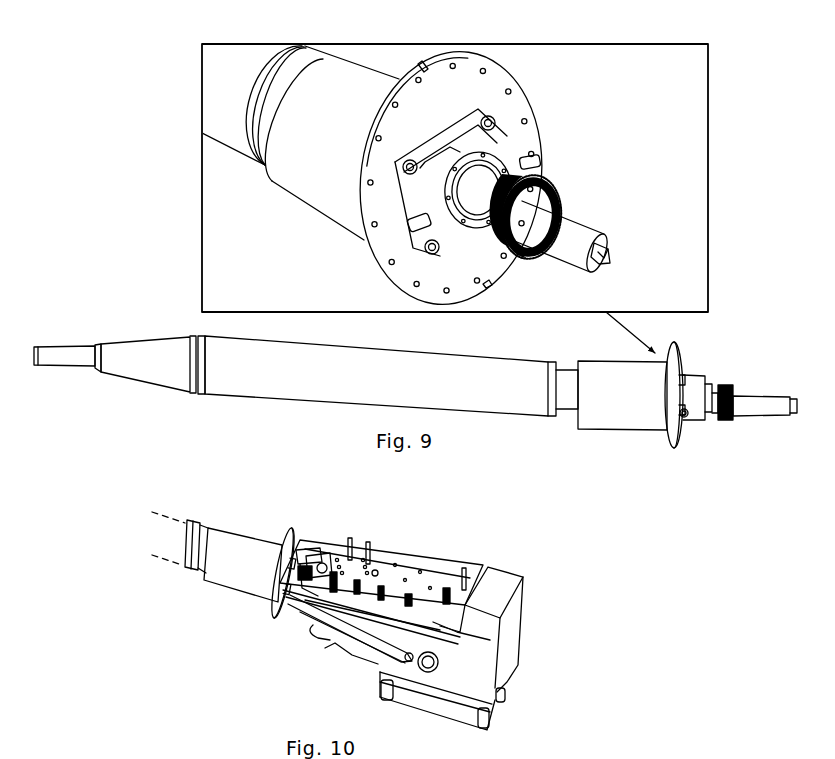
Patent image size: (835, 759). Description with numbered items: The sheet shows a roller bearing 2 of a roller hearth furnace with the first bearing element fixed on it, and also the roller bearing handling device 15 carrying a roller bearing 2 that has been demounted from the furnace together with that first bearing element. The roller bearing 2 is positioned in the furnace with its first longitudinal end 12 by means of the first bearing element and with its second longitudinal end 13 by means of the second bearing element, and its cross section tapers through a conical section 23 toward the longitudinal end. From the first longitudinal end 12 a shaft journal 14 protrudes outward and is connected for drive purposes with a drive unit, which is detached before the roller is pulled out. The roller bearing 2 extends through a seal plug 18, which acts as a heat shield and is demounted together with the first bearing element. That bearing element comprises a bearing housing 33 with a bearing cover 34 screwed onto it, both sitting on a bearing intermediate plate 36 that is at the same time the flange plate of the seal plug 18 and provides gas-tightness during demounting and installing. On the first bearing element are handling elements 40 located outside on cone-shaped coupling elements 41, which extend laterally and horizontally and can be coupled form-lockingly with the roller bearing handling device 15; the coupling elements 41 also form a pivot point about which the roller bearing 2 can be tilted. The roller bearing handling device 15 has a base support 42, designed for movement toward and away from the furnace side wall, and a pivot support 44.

In FIG. 9, the roller bearing 2 is at (222, 93).
In FIG. 10, the roller bearing 2 is at (152, 570).
In FIG. 9, the first longitudinal end 12 is at (633, 443).
In FIG. 9, the second longitudinal end 13 is at (70, 357).
In FIG. 9, the shaft journal 14 is at (550, 195).
In FIG. 10, the roller bearing handling device 15 is at (428, 613).
In FIG. 9, the seal plug 18 is at (300, 163).
In FIG. 10, the seal plug 18 is at (232, 590).
In FIG. 9, the conical section 23 is at (145, 350).
In FIG. 9, the bearing housing 33 is at (497, 140).
In FIG. 9, the bearing cover 34 is at (512, 158).
In FIG. 9, the bearing intermediate plate 36 is at (486, 79).
In FIG. 10, the bearing intermediate plate 36 is at (297, 531).
In FIG. 9, the handling element 40 is at (538, 339).
In FIG. 9, the coupling element 41 is at (540, 162).
In FIG. 10, the base support 42 is at (468, 688).
In FIG. 10, the pivot support 44 is at (387, 568).